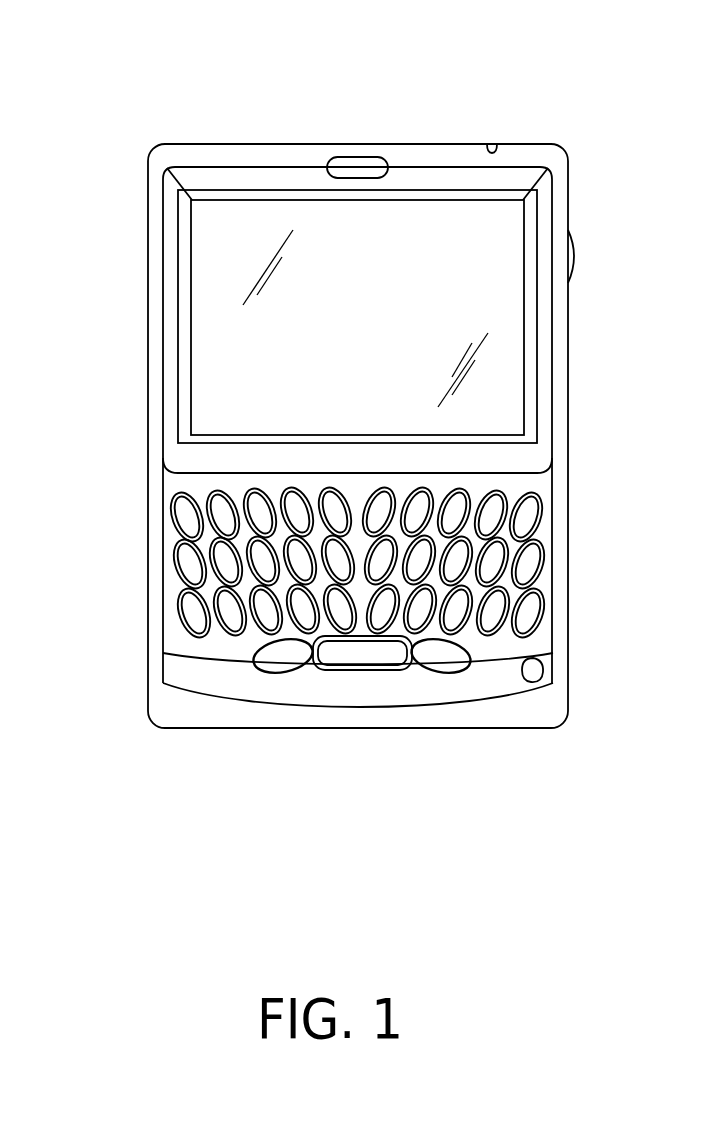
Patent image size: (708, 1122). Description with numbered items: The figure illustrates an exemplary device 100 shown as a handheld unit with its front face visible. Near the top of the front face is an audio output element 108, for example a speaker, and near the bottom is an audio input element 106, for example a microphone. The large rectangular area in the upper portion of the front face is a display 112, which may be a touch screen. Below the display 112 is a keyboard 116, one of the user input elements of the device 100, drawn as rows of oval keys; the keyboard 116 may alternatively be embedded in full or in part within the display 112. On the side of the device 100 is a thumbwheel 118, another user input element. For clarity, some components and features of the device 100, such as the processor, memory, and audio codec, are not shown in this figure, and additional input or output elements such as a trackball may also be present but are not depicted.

The device 100 is at (168, 66).
The audio input element 106 is at (520, 675).
The audio output element 108 is at (360, 157).
The display 112 is at (212, 254).
The keyboard 116 is at (176, 485).
The thumbwheel 118 is at (578, 256).